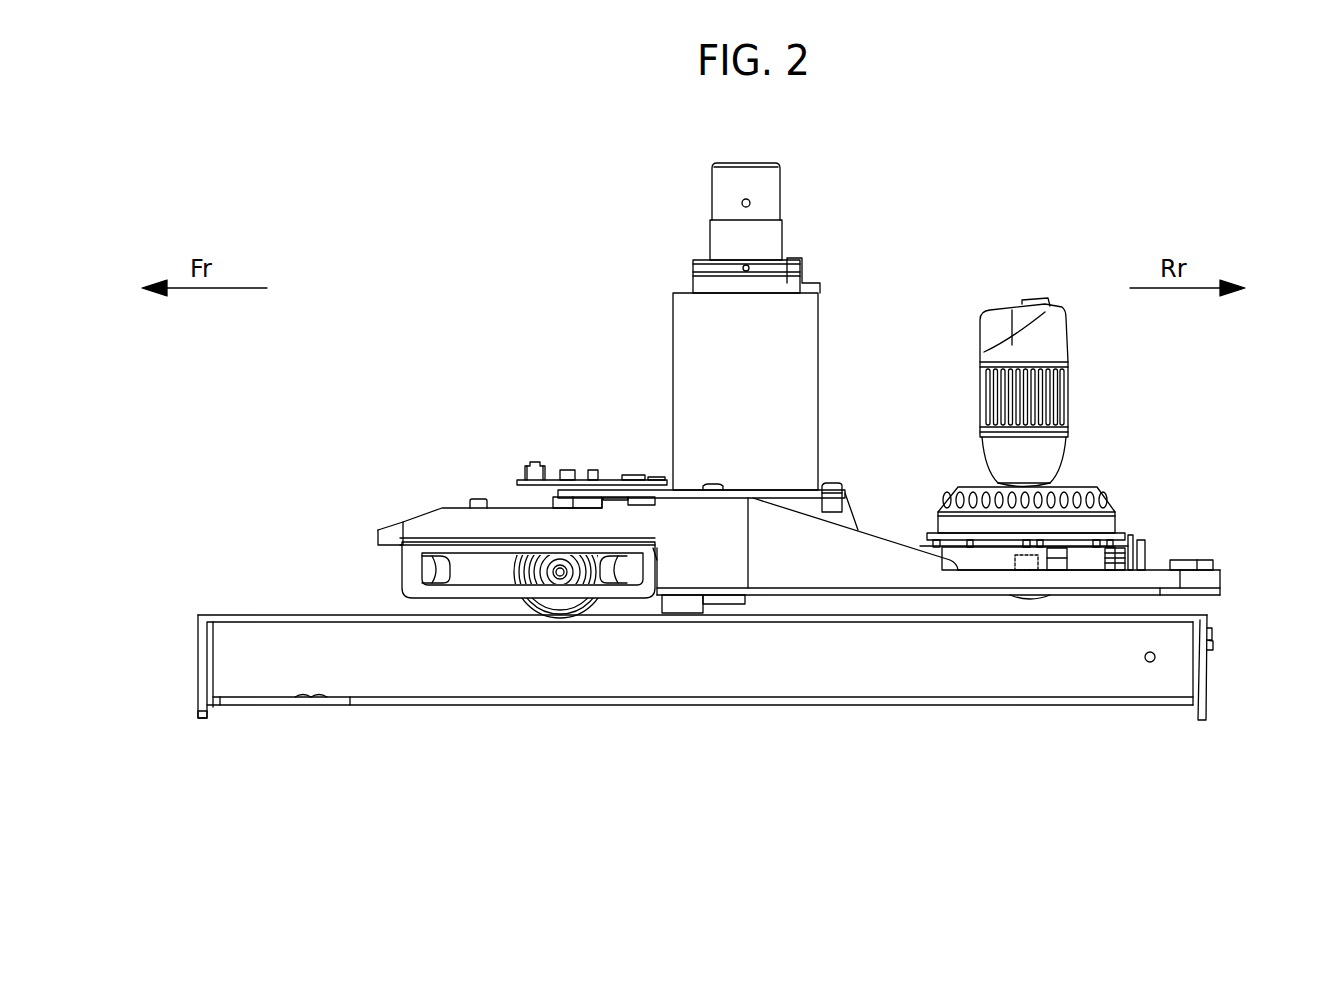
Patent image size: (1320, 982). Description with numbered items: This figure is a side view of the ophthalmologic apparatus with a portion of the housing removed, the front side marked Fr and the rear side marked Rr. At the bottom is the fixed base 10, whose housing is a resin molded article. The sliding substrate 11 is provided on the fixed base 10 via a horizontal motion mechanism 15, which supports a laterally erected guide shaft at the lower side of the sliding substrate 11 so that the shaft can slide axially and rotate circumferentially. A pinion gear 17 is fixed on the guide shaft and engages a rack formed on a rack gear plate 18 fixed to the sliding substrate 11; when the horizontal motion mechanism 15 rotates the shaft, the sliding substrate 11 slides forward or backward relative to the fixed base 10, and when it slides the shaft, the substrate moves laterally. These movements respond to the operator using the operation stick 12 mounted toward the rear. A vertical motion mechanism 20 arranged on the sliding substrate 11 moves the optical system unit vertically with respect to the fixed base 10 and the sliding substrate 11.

The fixed base 10 is at (858, 686).
The sliding substrate 11 is at (426, 521).
The operation stick 12 is at (1062, 340).
The horizontal motion mechanism 15 is at (572, 618).
The pinion gear 17 is at (552, 562).
The rack gear plate 18 is at (448, 566).
The vertical motion mechanism 20 is at (676, 360).